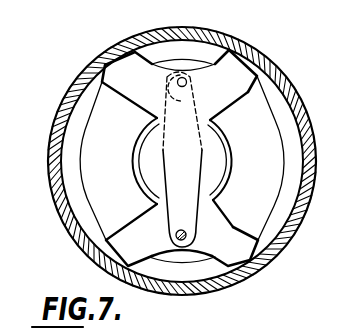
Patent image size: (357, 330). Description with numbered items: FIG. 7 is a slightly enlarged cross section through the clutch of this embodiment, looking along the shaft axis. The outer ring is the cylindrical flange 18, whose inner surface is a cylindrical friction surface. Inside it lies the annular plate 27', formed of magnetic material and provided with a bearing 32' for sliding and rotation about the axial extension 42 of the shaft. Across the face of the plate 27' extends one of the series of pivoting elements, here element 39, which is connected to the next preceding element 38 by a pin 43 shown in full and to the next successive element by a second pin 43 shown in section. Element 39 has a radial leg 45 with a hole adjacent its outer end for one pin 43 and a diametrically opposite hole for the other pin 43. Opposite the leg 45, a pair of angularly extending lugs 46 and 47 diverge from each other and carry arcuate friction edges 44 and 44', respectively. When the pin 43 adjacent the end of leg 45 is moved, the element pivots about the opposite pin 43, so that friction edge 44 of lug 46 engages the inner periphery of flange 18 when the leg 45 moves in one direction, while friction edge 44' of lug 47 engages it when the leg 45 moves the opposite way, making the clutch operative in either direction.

The cylindrical flange 18 is at (297, 97).
The annular plate 27' is at (182, 160).
The bearing 32' is at (205, 161).
The element 38 is at (153, 182).
The element 39 is at (189, 177).
The axial extension 42 is at (229, 168).
The pin 43 is at (186, 83).
The friction edge 44 is at (177, 162).
The friction edge 44' is at (170, 144).
The radial leg 45 is at (146, 232).
The lug 46 is at (138, 96).
The lug 47 is at (245, 92).